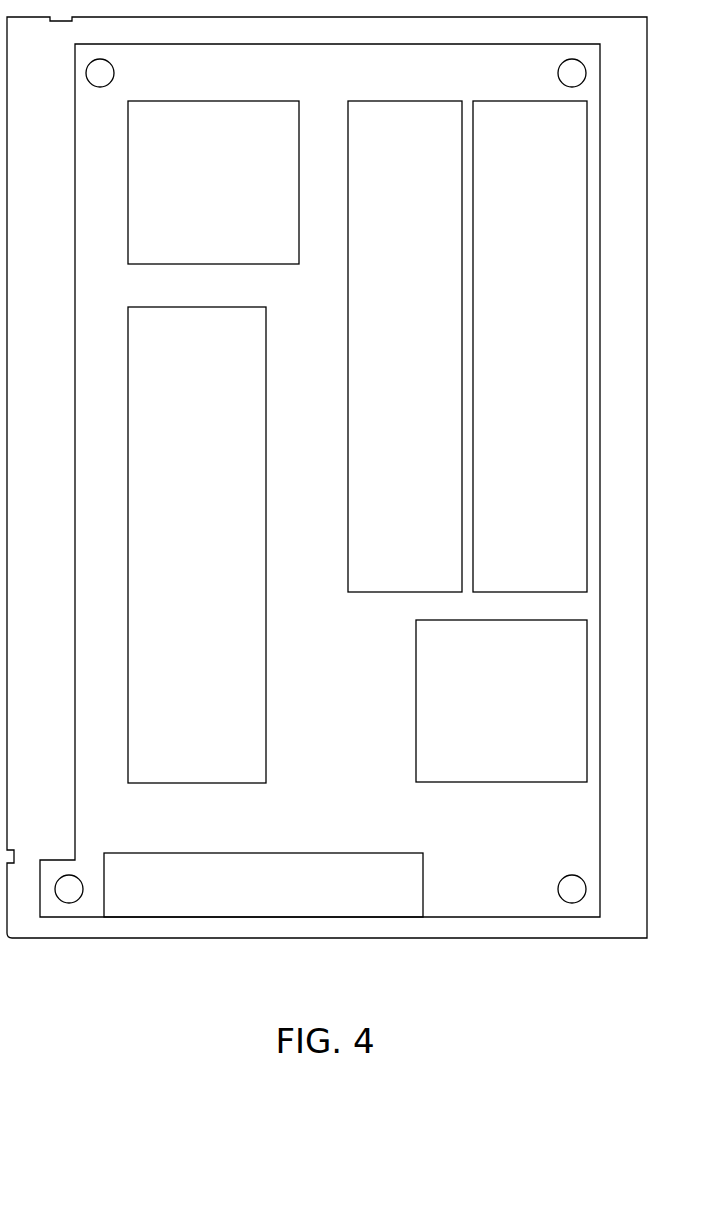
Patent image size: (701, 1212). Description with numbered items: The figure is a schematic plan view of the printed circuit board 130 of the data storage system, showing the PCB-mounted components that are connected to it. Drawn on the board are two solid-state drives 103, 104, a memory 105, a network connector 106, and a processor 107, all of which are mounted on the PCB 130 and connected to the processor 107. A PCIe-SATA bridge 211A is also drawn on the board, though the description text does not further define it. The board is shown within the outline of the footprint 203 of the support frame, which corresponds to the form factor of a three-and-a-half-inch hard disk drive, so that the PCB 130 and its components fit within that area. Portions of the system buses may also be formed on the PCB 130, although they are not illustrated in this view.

The footprint of support frame 203 is at (79, 938).
The printed circuit board 130 is at (314, 726).
The PCIe-SATA bridge 211A is at (184, 222).
The memory 105 is at (175, 571).
The solid-state drive 103 is at (382, 371).
The solid-state drive 104 is at (507, 371).
The processor 107 is at (479, 727).
The network connector 106 is at (240, 911).